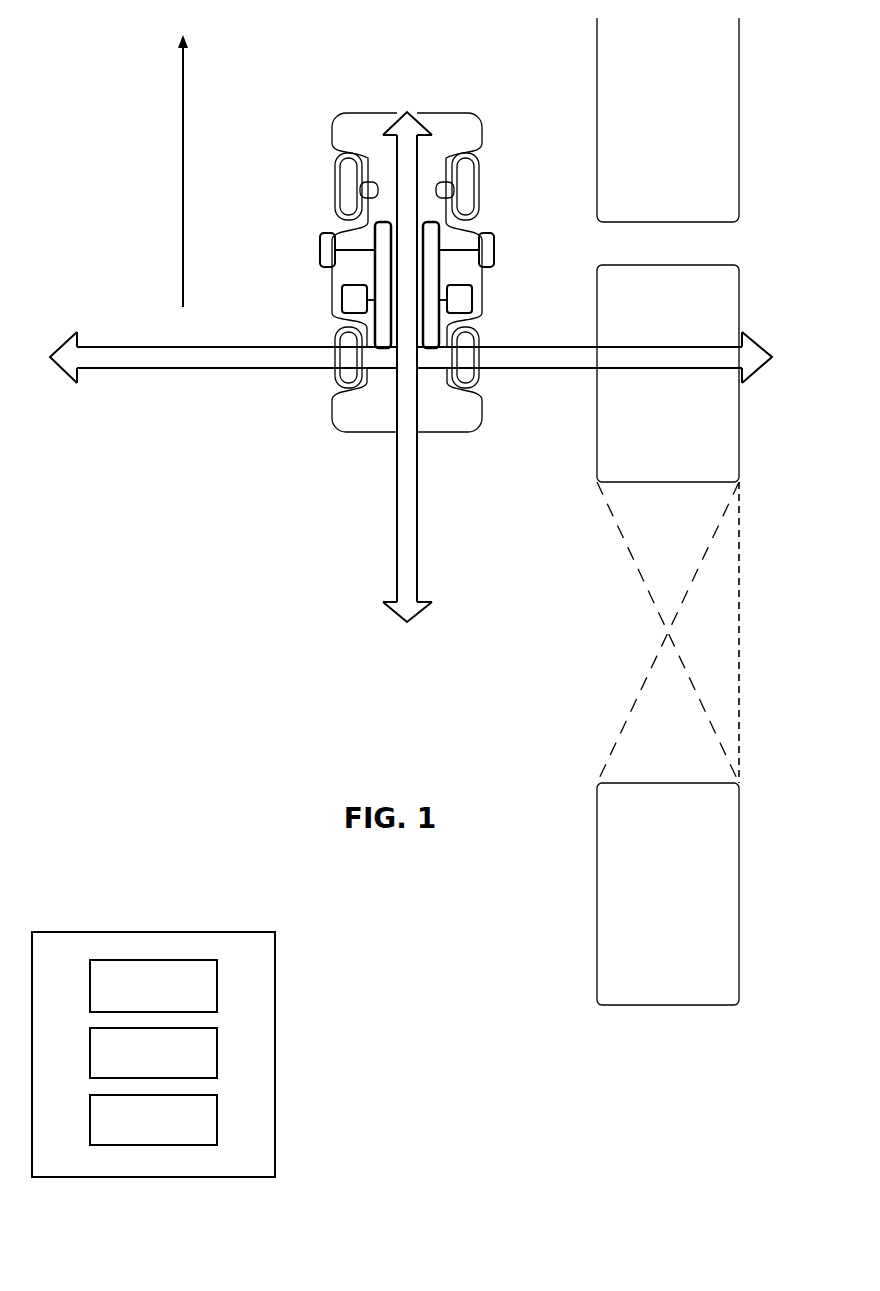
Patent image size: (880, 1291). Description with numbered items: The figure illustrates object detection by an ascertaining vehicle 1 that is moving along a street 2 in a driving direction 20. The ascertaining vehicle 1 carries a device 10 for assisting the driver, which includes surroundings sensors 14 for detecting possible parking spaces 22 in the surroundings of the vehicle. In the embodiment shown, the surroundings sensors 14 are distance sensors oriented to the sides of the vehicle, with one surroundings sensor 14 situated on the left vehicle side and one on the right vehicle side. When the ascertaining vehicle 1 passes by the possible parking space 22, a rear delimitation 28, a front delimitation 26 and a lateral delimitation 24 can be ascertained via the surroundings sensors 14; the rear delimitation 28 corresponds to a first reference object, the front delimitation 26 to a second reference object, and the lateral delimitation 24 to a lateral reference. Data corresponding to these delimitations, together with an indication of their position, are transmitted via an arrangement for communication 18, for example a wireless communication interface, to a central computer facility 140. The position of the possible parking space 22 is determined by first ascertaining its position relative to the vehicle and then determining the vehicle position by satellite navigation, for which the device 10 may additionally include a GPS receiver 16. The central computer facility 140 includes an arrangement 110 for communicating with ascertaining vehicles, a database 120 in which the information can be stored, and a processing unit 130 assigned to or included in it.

The ascertaining vehicle 1 is at (368, 128).
The street 2 is at (222, 566).
The device for assisting the driver 10 is at (362, 227).
The surroundings sensors 14 is at (320, 250).
The GPS receiver 16 is at (342, 298).
The arrangement for communication 18 is at (472, 298).
The driving direction 20 is at (182, 152).
The possible parking space 22 is at (680, 558).
The lateral delimitation 24 is at (745, 668).
The front delimitation 26 is at (675, 446).
The rear delimitation 28 is at (675, 880).
The arrangement for communication 110 is at (205, 985).
The database 120 is at (205, 1052).
The processing unit 130 is at (205, 1118).
The central computer facility 140 is at (194, 1001).